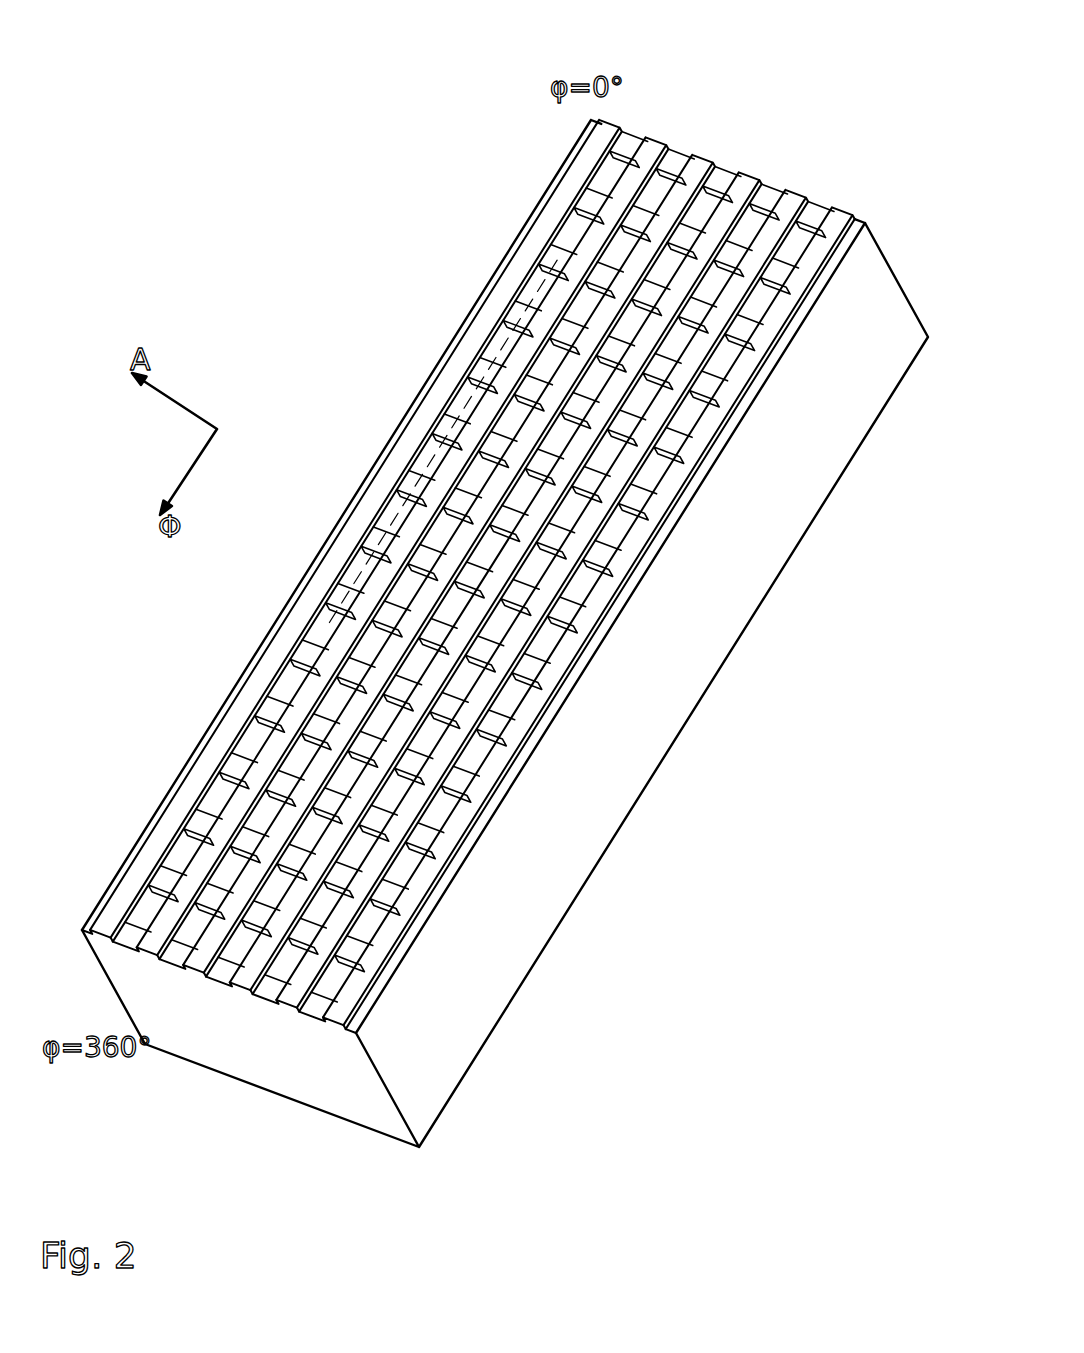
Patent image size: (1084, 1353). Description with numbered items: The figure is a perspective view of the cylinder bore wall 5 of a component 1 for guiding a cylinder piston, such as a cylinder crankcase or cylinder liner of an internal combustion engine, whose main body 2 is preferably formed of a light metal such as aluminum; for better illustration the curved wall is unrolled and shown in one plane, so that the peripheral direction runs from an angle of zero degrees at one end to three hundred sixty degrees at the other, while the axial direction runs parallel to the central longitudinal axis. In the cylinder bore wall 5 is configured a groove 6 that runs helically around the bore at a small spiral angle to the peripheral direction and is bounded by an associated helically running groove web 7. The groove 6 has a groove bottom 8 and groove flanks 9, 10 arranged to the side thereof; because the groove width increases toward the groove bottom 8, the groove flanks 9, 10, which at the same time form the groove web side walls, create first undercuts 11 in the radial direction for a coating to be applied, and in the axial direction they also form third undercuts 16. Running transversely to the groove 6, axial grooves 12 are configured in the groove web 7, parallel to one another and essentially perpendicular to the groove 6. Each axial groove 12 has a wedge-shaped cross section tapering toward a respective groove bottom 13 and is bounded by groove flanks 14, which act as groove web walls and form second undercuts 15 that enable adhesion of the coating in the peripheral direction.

The component 1 is at (357, 232).
The main body 2 is at (882, 295).
The cylinder bore wall 5 is at (703, 207).
The groove 6 is at (703, 163).
The groove web 7 is at (530, 278).
The groove bottom 8 is at (800, 198).
The groove flank 9 is at (835, 215).
The groove flank 10 is at (822, 250).
The first undercuts 11 is at (312, 1005).
The axial grooves 12 is at (107, 890).
The groove bottom 13 is at (295, 972).
The groove flanks 14 is at (323, 992).
The second undercuts 15 is at (368, 930).
The third undercuts 16 is at (495, 372).